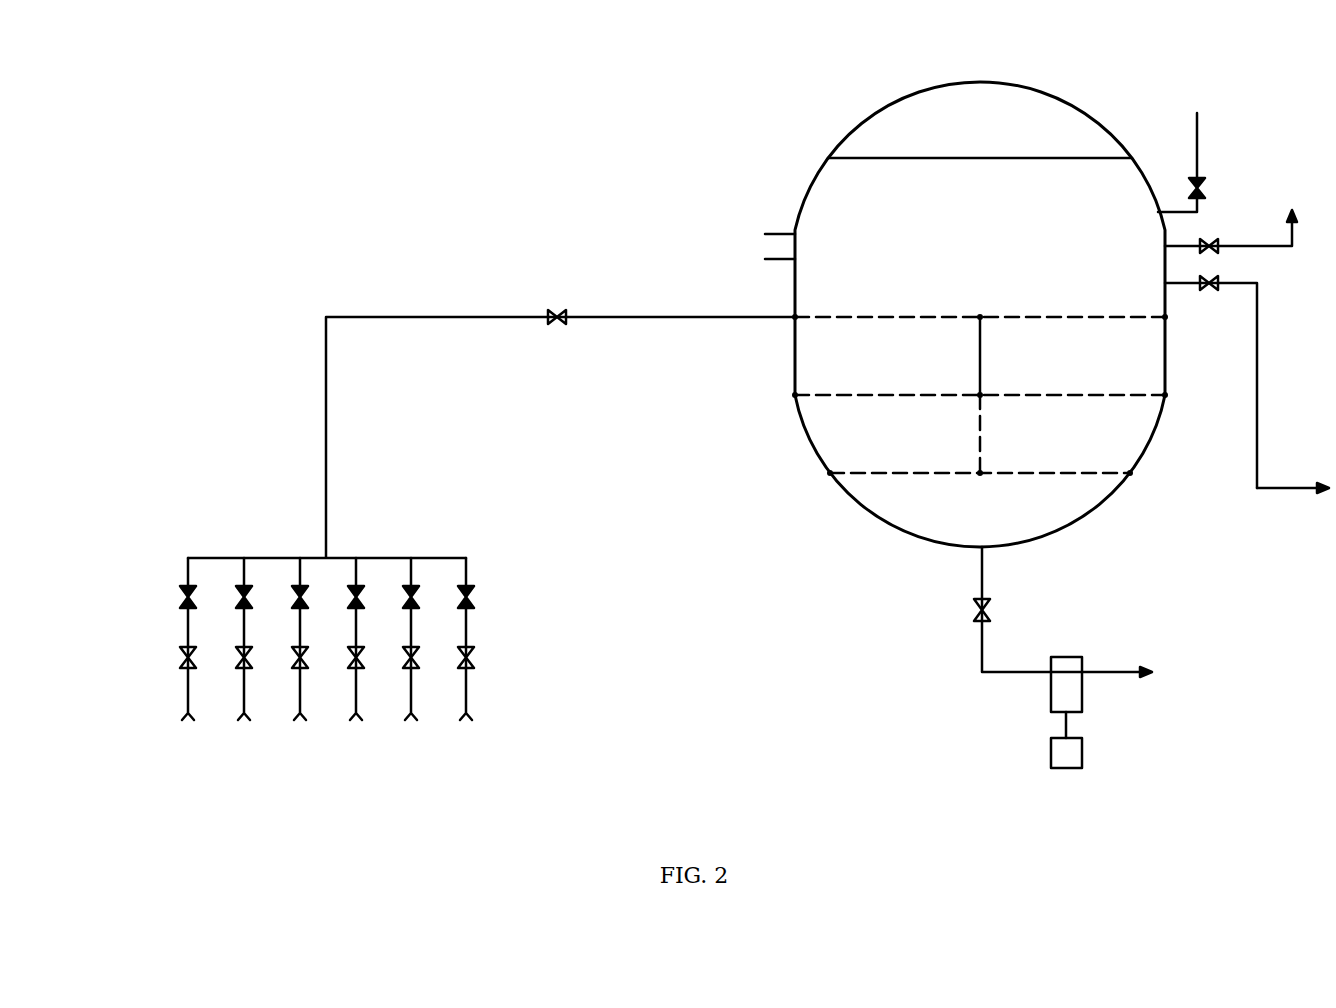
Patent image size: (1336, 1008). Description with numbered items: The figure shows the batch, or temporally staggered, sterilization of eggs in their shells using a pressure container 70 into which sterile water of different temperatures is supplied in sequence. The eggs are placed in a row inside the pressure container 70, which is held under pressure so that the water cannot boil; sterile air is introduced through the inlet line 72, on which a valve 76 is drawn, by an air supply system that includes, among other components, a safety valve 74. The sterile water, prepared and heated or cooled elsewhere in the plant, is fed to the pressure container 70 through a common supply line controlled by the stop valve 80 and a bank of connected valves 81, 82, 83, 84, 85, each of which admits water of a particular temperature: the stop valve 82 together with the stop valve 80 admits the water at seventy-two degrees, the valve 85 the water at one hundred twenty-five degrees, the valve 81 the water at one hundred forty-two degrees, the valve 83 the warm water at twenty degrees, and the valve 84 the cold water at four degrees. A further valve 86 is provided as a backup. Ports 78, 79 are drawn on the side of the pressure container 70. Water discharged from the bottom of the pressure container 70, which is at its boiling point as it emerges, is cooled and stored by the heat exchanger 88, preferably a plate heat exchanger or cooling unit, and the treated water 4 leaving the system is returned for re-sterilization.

The returned water 4 is at (1108, 670).
The pressure container 70 is at (876, 110).
The inlet line 72 is at (1202, 135).
The safety valve 74 is at (1220, 250).
The valve 76 is at (1207, 188).
The port 78 is at (759, 227).
The port 79 is at (759, 253).
The stop valve 80 is at (557, 306).
The valve 81 is at (414, 663).
The stop valve 82 is at (356, 662).
The valve 83 is at (300, 662).
The valve 84 is at (243, 662).
The valve 85 is at (183, 656).
The valve 86 is at (475, 660).
The heat exchanger 88 is at (1082, 754).